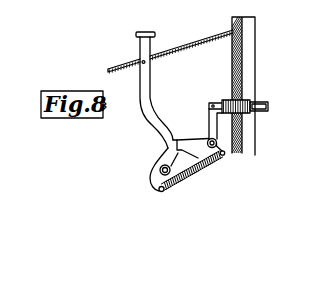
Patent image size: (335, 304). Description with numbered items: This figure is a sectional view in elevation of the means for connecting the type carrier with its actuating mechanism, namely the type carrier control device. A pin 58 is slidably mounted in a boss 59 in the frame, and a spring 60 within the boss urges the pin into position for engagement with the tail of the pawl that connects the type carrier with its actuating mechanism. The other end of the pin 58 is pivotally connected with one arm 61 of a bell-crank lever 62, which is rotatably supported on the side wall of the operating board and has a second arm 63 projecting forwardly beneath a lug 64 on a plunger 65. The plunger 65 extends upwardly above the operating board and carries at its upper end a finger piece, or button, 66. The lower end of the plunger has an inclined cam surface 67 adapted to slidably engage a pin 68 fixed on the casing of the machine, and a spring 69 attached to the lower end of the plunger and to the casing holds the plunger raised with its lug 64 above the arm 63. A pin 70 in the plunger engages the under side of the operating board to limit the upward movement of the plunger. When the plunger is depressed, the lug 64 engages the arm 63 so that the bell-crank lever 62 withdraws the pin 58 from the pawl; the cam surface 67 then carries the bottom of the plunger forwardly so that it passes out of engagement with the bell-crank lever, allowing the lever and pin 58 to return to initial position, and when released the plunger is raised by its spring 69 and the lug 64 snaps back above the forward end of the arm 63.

The pin 58 is at (264, 103).
The boss 59 is at (246, 97).
The spring 60 is at (218, 101).
The arm of bell-crank lever 61 is at (209, 115).
The bell-crank lever 62 is at (220, 150).
The arm of bell-crank lever 63 is at (193, 173).
The lug 64 is at (188, 138).
The plunger 65 is at (147, 120).
The finger piece or button 66 is at (149, 32).
The inclined cam surface 67 is at (170, 154).
The pin 68 is at (159, 168).
The spring 69 is at (178, 187).
The pin 70 is at (141, 61).